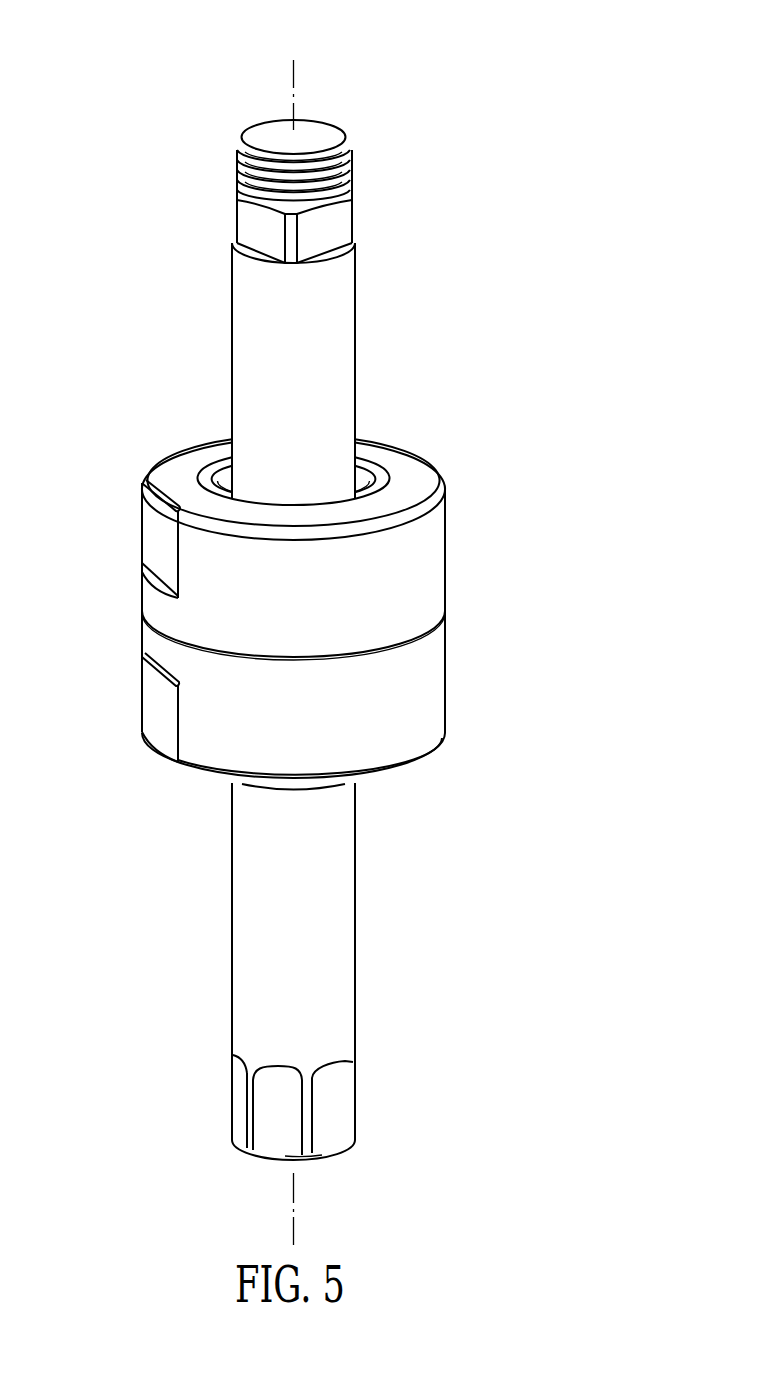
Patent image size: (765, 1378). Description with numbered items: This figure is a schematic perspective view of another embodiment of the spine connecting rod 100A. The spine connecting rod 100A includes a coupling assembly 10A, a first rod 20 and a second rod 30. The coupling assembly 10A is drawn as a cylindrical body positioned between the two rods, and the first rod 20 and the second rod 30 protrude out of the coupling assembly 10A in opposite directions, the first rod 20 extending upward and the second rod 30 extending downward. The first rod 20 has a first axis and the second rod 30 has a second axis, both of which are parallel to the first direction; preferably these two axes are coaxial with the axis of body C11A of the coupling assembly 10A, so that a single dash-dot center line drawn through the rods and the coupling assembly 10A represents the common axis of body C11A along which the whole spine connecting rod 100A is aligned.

The spine connecting rod 100A is at (143, 77).
The coupling assembly 10A is at (142, 520).
The first rod 20 is at (232, 340).
The second rod 30 is at (232, 938).
The axis of body C11A is at (358, 629).